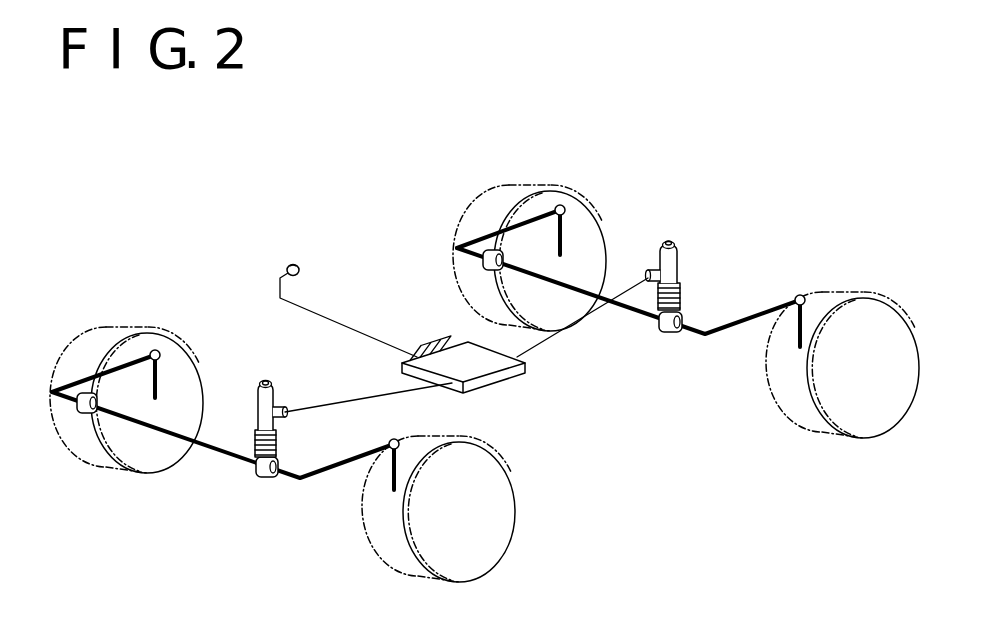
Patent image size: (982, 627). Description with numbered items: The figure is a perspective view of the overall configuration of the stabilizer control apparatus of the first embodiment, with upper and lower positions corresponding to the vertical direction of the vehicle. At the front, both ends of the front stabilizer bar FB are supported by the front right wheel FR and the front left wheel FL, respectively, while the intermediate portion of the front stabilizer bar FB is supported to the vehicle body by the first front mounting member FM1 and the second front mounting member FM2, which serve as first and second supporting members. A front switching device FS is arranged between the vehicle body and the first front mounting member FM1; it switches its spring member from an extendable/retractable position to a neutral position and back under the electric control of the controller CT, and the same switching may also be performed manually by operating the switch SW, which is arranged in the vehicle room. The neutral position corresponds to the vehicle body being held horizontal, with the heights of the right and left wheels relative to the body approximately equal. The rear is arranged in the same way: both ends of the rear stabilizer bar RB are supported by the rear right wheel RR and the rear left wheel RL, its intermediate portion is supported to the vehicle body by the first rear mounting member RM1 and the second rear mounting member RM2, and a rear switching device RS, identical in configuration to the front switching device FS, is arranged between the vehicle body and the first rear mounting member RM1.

The front right wheel FR is at (78, 410).
The front left wheel FL is at (480, 552).
The rear right wheel RR is at (473, 290).
The rear left wheel RL is at (847, 292).
The front stabilizer bar FB is at (220, 455).
The rear stabilizer bar RB is at (645, 313).
The first front mounting member FM1 is at (258, 468).
The second front mounting member FM2 is at (140, 450).
The first rear mounting member RM1 is at (667, 330).
The second rear mounting member RM2 is at (482, 262).
The front switching device FS is at (257, 410).
The rear switching device RS is at (678, 267).
The controller CT is at (512, 387).
The switch SW is at (300, 265).